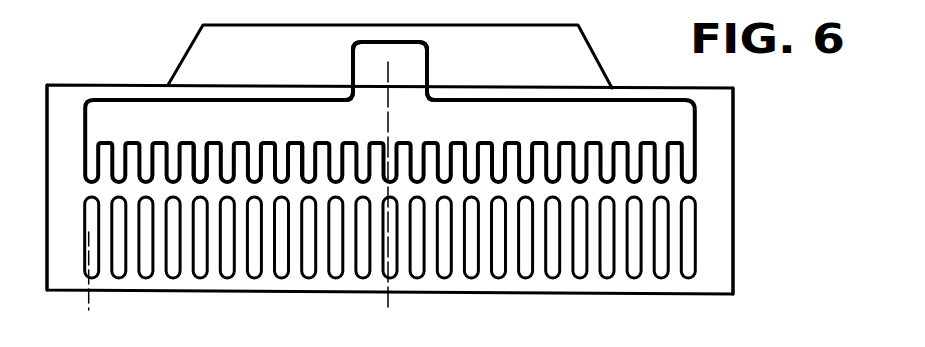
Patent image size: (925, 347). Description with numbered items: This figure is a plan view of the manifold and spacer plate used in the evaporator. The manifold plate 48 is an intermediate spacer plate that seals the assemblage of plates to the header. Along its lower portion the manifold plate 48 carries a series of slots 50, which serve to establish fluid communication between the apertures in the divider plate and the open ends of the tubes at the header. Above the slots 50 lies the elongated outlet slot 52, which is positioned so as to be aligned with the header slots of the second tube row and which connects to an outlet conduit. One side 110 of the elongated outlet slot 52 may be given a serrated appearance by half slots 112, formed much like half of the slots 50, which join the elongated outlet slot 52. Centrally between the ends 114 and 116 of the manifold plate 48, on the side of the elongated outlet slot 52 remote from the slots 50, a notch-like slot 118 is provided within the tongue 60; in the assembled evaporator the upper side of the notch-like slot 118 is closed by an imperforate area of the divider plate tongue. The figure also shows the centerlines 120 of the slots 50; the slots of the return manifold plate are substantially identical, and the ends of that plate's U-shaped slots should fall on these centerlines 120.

The manifold plate 48 is at (713, 100).
The slots 50 is at (89, 232).
The elongated outlet slot 52 is at (142, 106).
The tongue 60 is at (590, 43).
The side of the slot 110 is at (300, 140).
The half slots 112 is at (197, 165).
The end of the manifold plate 114 is at (47, 127).
The end of the manifold plate 116 is at (735, 198).
The notch-like slot 118 is at (398, 46).
The centerlines 120 is at (92, 290).